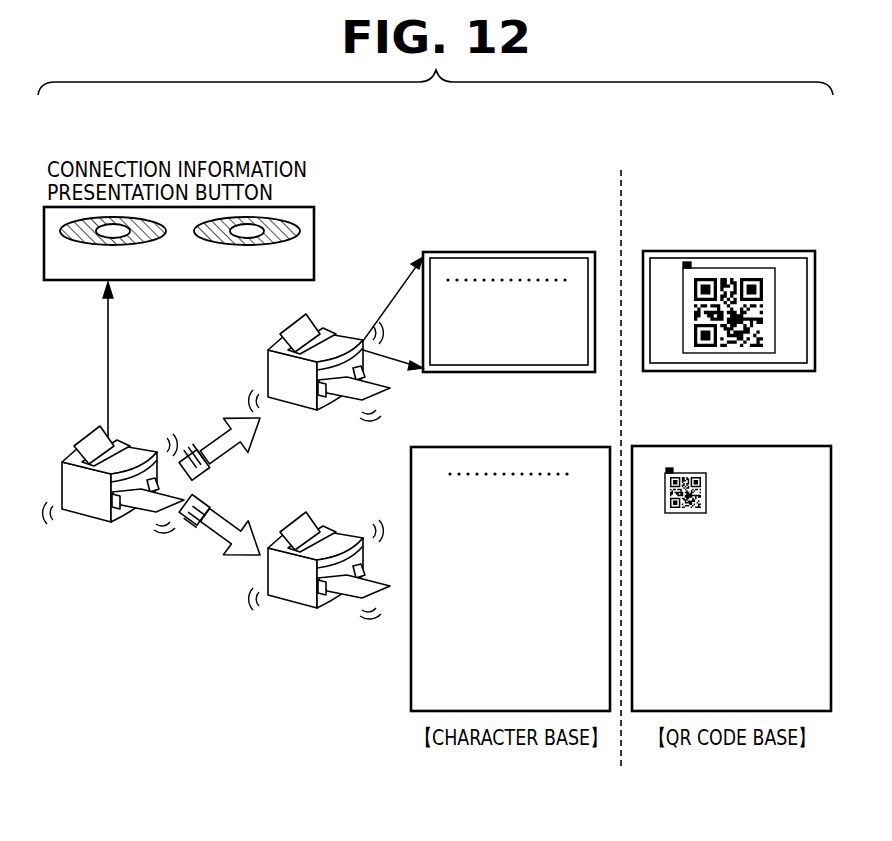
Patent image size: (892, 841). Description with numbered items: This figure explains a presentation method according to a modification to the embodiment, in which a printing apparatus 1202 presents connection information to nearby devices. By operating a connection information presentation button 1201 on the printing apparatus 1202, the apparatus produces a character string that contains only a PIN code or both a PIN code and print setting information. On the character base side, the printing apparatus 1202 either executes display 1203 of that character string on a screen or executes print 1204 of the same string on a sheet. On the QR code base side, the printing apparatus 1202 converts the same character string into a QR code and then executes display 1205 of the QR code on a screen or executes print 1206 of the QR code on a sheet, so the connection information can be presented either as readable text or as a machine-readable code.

The connection information presentation button 1201 is at (314, 223).
The printing apparatus 1202 is at (146, 446).
The display of character string 1203 is at (559, 252).
The print of character string 1204 is at (569, 447).
The display of QR code 1205 is at (777, 251).
The print of QR code 1206 is at (789, 446).